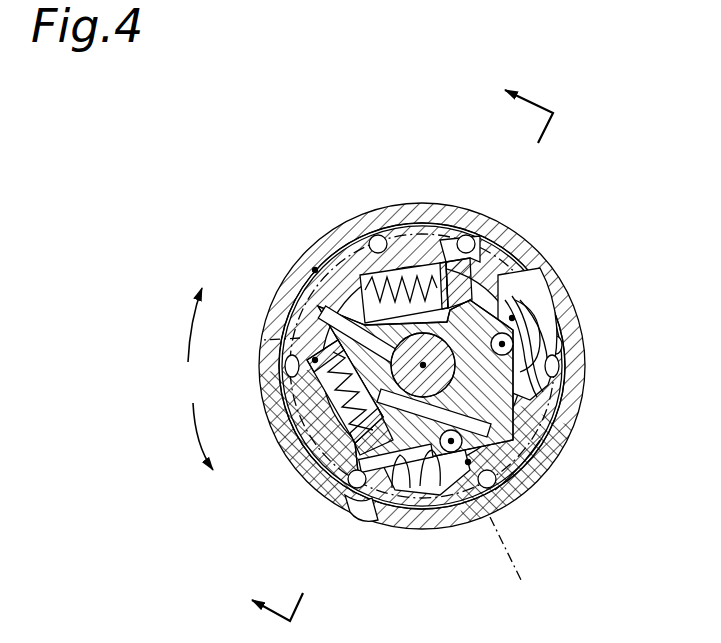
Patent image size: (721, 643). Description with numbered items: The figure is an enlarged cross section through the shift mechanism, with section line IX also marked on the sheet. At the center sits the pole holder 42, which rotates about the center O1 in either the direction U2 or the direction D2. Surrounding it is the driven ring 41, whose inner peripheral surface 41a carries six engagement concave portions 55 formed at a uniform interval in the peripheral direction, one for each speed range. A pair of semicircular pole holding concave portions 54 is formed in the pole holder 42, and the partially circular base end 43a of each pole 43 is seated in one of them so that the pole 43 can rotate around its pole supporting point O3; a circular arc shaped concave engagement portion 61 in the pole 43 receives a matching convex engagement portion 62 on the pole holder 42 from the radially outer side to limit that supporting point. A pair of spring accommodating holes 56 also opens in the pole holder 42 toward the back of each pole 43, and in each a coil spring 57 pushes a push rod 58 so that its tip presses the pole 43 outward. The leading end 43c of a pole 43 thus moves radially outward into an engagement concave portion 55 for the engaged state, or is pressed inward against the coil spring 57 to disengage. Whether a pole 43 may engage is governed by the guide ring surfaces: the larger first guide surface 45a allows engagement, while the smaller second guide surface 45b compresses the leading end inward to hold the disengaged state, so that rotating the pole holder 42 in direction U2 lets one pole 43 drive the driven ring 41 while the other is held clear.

The driven ring 41 is at (468, 205).
The inner peripheral surface 41a is at (548, 352).
The pole holder 42 is at (340, 317).
The pole 43 is at (545, 268).
The base end 43a is at (548, 455).
The leading end 43c is at (540, 237).
The first guide surface 45a is at (300, 338).
The second guide surface 45b is at (520, 566).
The pole holding concave portion 54 is at (555, 390).
The engagement concave portion 55 is at (372, 232).
The spring accommodating hole 56 is at (350, 265).
The coil spring 57 is at (378, 282).
The push rod 58 is at (436, 262).
The concave engagement portion 61 is at (545, 290).
The convex engagement portion 62 is at (540, 318).
The rotation center O1 is at (427, 367).
The pole supporting point O3 is at (555, 420).
The direction U2 is at (179, 317).
The direction D2 is at (190, 450).
The section line IX is at (586, 146).